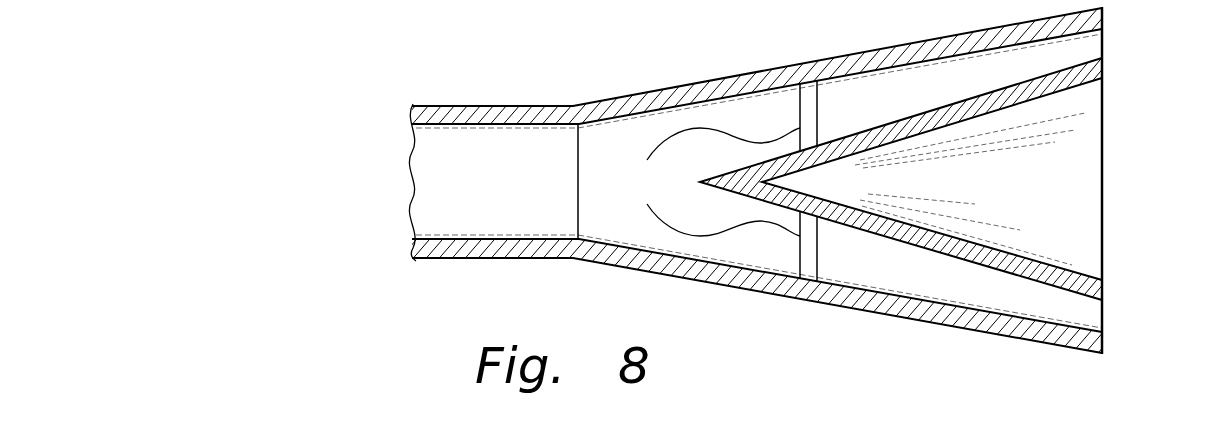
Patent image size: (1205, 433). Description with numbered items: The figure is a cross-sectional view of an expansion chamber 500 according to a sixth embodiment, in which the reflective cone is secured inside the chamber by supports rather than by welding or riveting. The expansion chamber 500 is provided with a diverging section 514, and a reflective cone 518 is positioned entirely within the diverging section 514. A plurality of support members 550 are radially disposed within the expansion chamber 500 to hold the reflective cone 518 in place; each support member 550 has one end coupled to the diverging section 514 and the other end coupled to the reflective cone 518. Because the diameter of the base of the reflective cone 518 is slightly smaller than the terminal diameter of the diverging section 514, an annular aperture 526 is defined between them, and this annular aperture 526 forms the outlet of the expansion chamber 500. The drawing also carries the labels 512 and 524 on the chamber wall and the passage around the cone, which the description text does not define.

The expansion chamber 500 is at (300, 192).
The outer tubular wall 512 is at (455, 105).
The diverging section 514 is at (519, 189).
The reflective cone 518 is at (905, 118).
The annular flow passage 524 is at (888, 268).
The annular aperture 526 is at (1110, 42).
The support member 550 is at (705, 182).